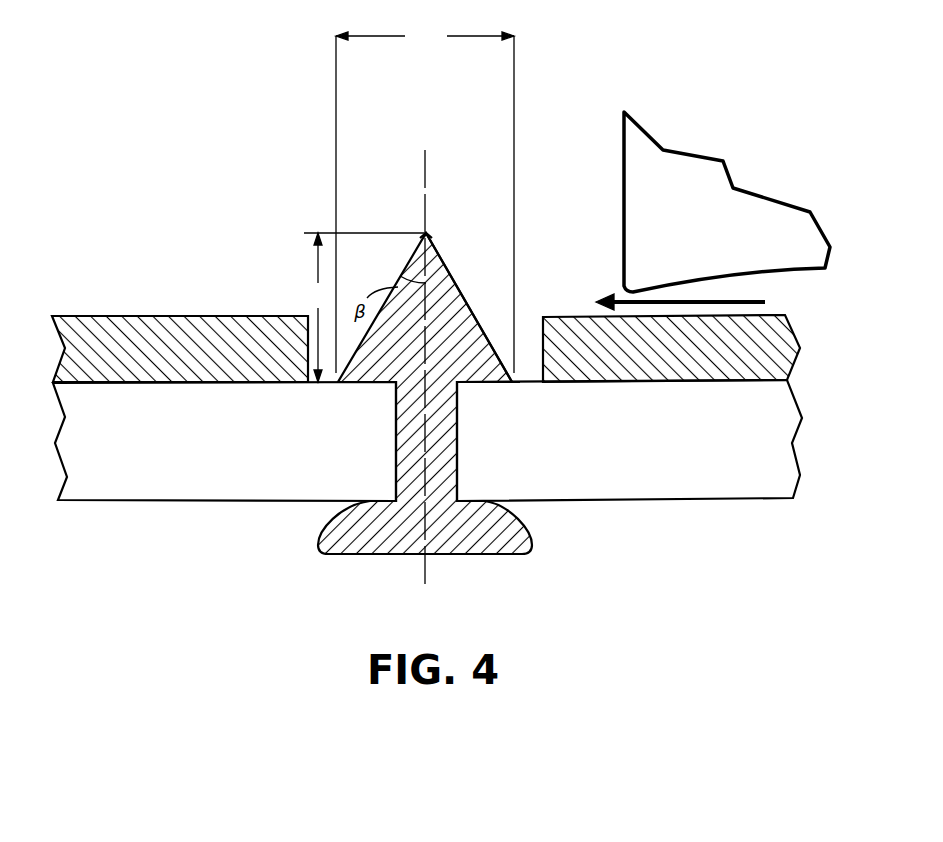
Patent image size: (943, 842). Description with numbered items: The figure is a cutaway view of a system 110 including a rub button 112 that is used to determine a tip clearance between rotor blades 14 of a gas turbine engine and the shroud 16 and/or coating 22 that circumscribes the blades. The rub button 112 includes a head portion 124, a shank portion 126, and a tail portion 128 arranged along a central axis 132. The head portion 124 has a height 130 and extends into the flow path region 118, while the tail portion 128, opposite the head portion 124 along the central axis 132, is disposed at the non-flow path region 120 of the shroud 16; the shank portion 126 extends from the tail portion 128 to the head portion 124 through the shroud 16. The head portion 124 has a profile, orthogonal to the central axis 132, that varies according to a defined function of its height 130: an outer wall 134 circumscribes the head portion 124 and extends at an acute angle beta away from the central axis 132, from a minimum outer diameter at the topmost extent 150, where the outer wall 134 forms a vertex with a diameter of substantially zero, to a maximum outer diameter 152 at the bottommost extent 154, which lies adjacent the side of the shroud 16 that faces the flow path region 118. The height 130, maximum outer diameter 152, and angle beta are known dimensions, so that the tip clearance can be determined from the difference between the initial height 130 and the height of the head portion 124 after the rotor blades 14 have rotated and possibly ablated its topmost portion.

The system 110 is at (159, 135).
The rub button 112 is at (454, 380).
The rotor blades 14 is at (707, 178).
The shroud 16 is at (708, 465).
The coating 22 is at (108, 330).
The flow path region 118 is at (148, 212).
The non-flow path region 120 is at (178, 568).
The head portion 124 is at (454, 414).
The shank portion 126 is at (454, 421).
The tail portion 128 is at (502, 565).
The height 130 is at (364, 307).
The central axis 132 is at (425, 558).
The outer wall 134 is at (492, 317).
The topmost extent 150 is at (428, 218).
The maximum outer diameter 152 is at (425, 200).
The bottommost extent 154 is at (483, 398).